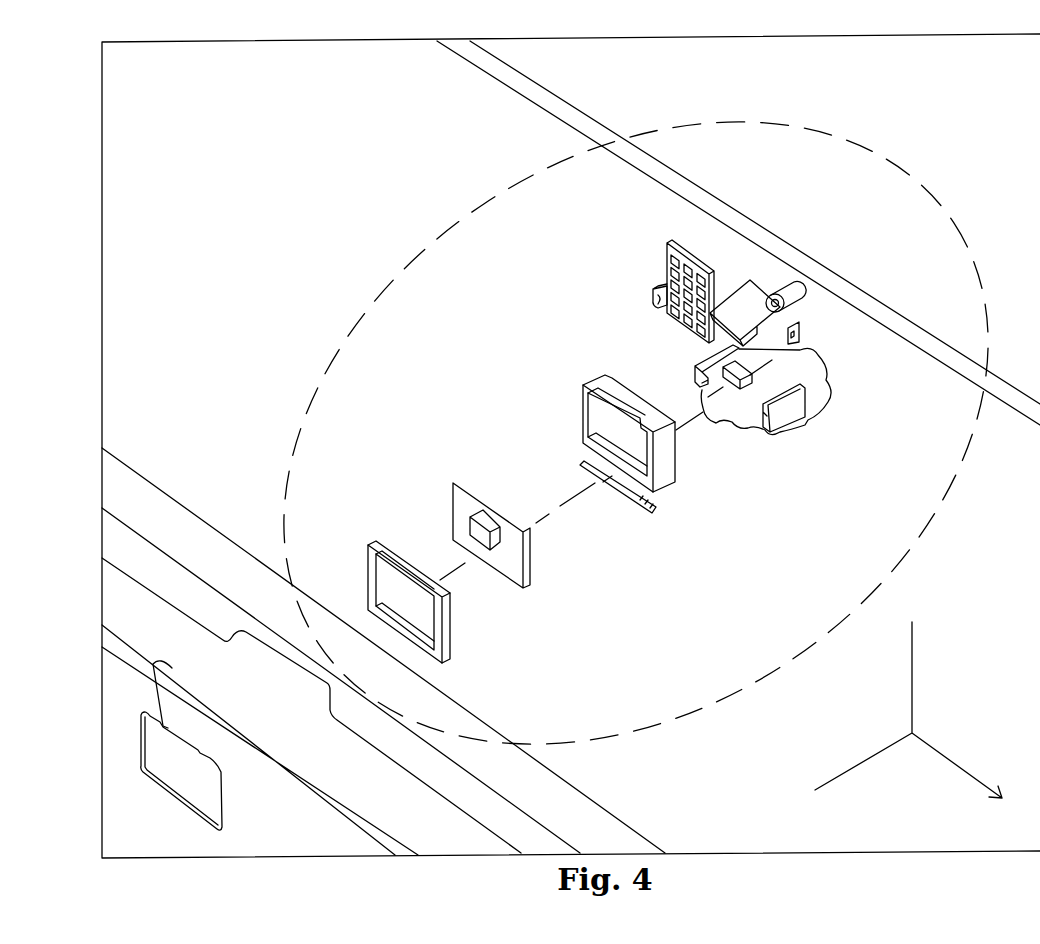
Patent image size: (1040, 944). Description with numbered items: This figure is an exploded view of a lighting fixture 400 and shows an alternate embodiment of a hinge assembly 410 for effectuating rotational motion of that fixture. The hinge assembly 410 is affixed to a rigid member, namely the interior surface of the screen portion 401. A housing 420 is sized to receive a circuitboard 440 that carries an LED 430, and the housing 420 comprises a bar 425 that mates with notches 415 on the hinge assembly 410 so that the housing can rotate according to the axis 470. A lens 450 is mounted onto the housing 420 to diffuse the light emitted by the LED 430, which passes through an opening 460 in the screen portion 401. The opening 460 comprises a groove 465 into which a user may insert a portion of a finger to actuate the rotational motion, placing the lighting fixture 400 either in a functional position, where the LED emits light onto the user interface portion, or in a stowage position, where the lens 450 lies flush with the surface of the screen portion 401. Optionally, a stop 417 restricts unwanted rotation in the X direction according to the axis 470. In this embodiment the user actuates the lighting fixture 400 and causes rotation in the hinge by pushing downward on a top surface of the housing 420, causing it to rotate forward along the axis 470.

The lighting fixture 400 is at (892, 157).
The screen portion 401 is at (318, 178).
The hinge assembly 410 is at (800, 353).
The notches 415 is at (730, 400).
The stop 417 is at (750, 298).
The housing 420 is at (595, 382).
The bar 425 is at (656, 510).
The LED 430 is at (473, 530).
The circuitboard 440 is at (508, 568).
The lens 450 is at (377, 571).
The opening 460 is at (159, 778).
The groove 465 is at (176, 662).
The axis 470 is at (907, 707).